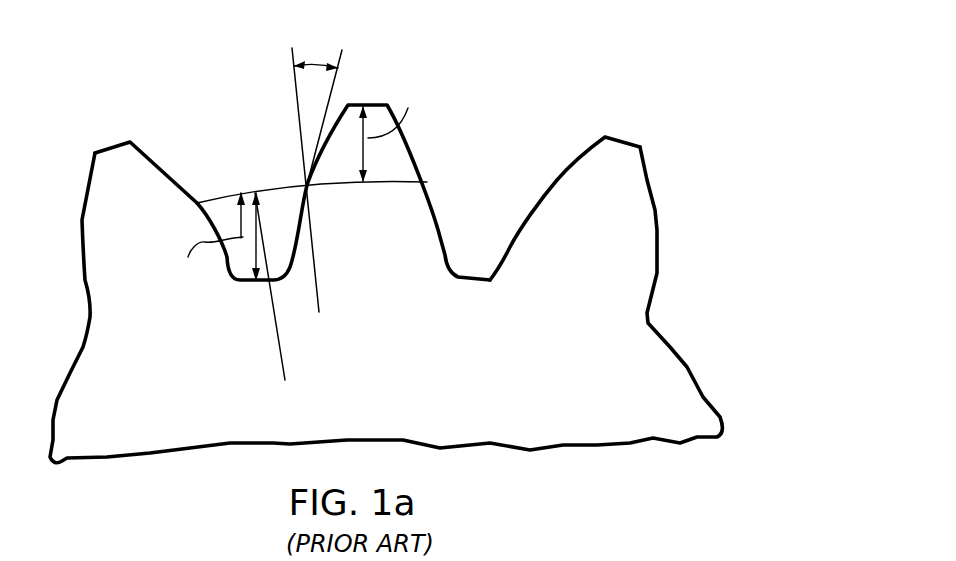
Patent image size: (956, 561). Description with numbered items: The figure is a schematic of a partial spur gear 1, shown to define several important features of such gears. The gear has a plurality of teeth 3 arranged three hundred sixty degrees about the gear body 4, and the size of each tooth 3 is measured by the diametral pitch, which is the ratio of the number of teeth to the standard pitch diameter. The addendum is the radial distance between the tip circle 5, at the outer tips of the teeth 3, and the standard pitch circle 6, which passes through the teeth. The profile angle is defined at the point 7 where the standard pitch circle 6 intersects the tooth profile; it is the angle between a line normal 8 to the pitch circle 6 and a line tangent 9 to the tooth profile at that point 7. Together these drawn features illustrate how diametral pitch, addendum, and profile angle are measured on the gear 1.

The gear 1 is at (386, 266).
The teeth 3 is at (615, 153).
The gear body 4 is at (142, 428).
The tip circle 5 is at (113, 147).
The standard pitch circle 6 is at (285, 361).
The point of intersection 7 is at (302, 180).
The line normal to the pitch circle 8 is at (297, 102).
The line tangent to the tooth profile 9 is at (333, 88).